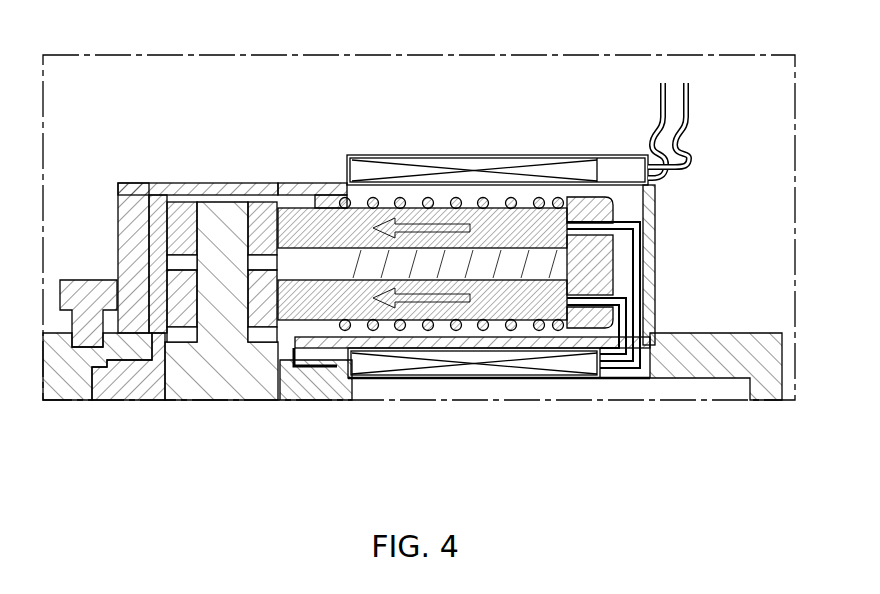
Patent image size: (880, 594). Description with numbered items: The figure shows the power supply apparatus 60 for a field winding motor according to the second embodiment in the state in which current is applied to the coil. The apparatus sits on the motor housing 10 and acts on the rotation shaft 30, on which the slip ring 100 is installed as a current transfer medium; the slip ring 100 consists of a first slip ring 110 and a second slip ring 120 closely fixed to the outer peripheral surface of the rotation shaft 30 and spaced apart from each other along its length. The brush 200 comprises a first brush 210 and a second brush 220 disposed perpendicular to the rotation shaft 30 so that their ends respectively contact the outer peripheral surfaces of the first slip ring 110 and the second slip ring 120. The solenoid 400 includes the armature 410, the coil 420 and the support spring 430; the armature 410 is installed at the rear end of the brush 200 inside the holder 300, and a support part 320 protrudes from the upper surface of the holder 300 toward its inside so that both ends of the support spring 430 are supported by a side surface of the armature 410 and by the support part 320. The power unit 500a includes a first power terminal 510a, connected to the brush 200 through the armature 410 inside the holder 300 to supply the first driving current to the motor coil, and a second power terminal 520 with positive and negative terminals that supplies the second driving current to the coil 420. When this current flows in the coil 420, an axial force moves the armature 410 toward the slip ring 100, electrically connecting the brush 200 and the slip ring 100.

The power supply apparatus 60 is at (273, 23).
The motor housing 10 is at (713, 370).
The rotation shaft 30 is at (216, 388).
The slip ring 100 is at (143, 272).
The first slip ring 110 is at (167, 273).
The second slip ring 120 is at (167, 208).
The brush 200 is at (384, 231).
The first brush 210 is at (252, 182).
The second brush 220 is at (314, 167).
The support part 320 is at (333, 185).
The holder 300 is at (657, 300).
The solenoid 400 is at (494, 260).
The armature 410 is at (567, 179).
The coil 420 is at (487, 165).
The support spring 430 is at (542, 98).
The power unit 500a is at (689, 217).
The first power terminal 510a is at (640, 242).
The second power terminal 520 is at (696, 122).